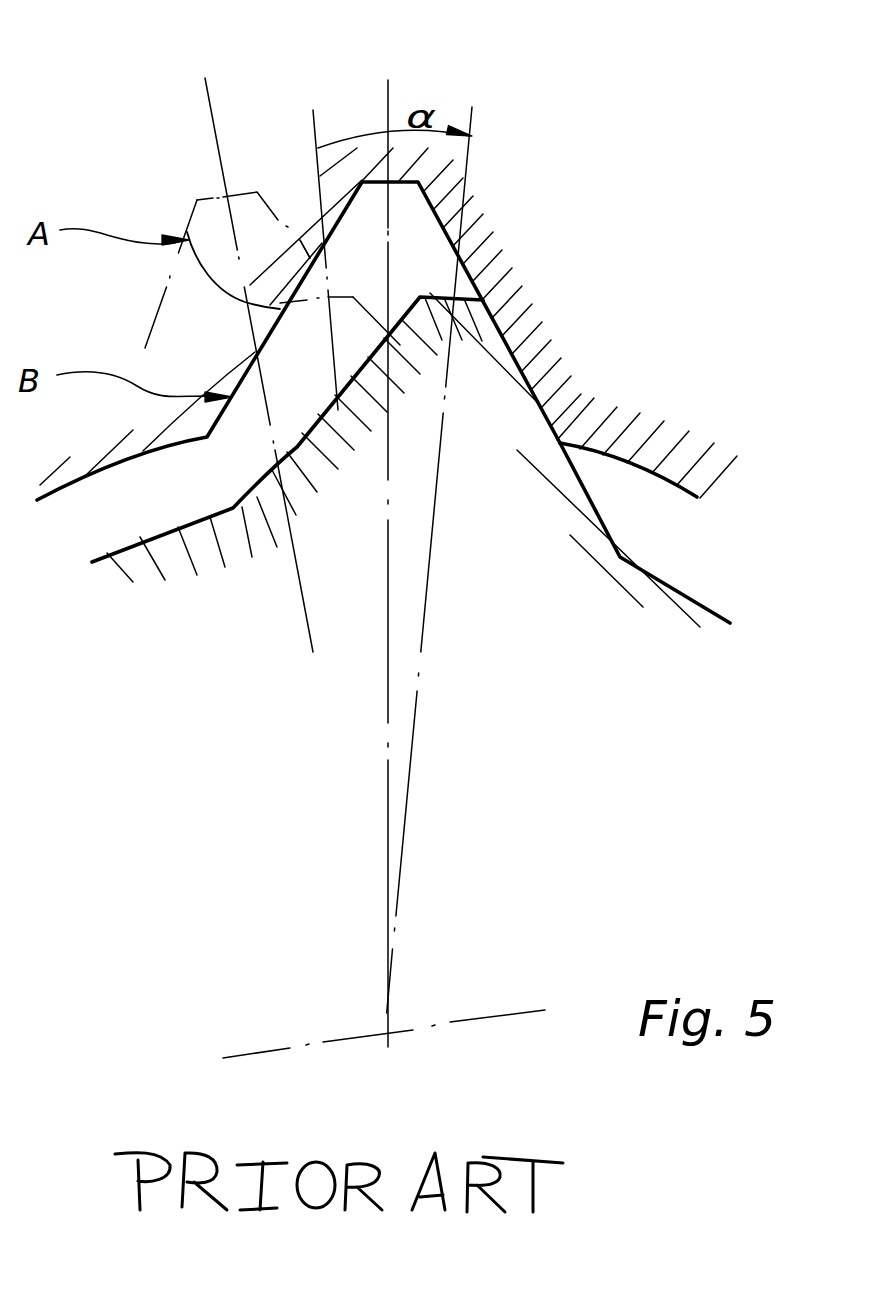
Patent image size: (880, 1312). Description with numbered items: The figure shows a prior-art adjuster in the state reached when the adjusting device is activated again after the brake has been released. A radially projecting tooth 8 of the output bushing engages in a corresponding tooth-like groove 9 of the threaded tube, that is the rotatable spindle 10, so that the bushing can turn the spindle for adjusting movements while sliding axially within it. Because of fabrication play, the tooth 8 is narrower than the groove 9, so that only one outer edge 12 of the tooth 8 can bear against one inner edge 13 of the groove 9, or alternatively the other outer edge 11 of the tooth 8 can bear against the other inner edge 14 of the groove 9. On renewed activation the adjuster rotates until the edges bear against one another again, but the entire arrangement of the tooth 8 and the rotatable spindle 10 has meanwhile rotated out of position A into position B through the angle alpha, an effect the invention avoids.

The tooth 8 is at (580, 372).
The tooth-like groove 9 is at (410, 222).
The rotatable spindle 10 is at (488, 285).
The other outer edge 11 is at (280, 441).
The outer edge 12 is at (580, 372).
The inner edge 13 is at (507, 342).
The other inner edge 14 is at (187, 232).